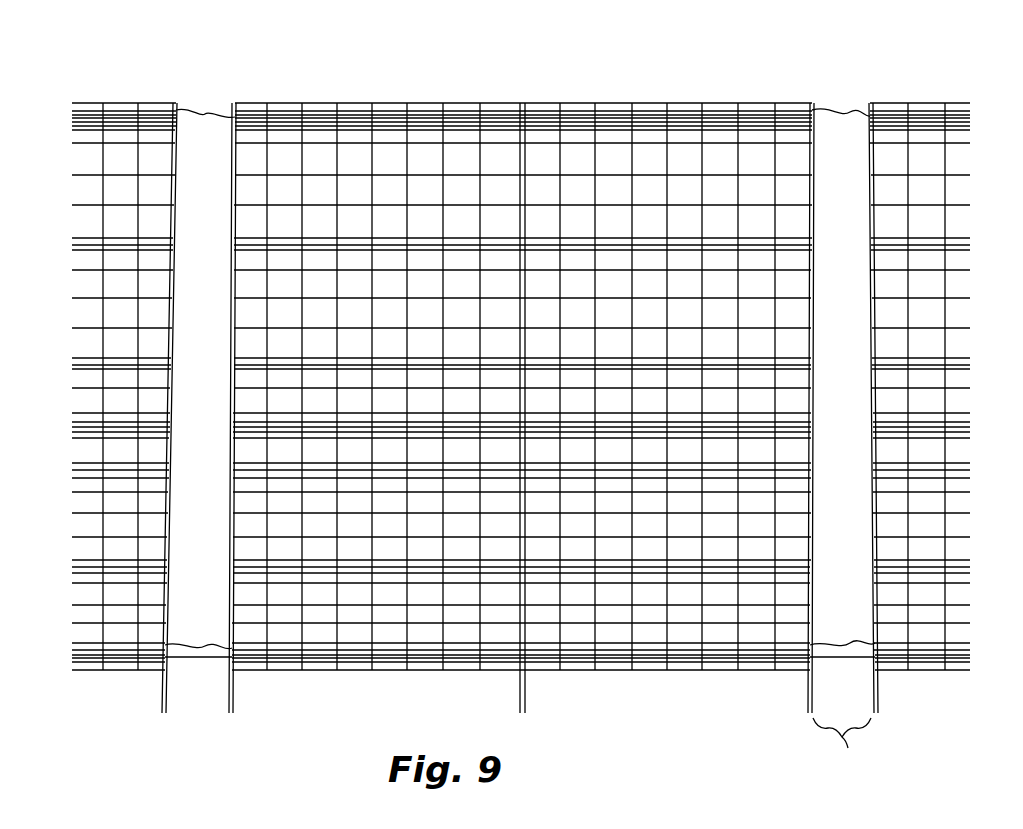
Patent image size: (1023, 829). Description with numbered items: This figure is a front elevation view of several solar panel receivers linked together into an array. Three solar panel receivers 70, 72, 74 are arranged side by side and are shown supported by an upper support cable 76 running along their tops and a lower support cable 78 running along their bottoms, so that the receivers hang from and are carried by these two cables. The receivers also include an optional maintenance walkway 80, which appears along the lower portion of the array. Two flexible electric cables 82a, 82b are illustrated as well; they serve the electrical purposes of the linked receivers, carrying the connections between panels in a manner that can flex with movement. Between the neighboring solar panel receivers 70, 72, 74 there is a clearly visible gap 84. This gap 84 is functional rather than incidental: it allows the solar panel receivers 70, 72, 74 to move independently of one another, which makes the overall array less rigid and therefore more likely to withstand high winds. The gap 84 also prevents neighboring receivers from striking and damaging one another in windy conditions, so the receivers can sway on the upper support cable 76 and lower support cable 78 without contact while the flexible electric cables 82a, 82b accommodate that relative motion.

The solar panel receiver 70 is at (118, 102).
The solar panel receiver 72 is at (637, 130).
The solar panel receiver 74 is at (913, 102).
The upper support cable 76 is at (205, 110).
The lower support cable 78 is at (195, 660).
The maintenance walkway 80 is at (632, 673).
The flexible electric cable 82a is at (887, 642).
The flexible electric cable 82b is at (832, 108).
The gap 84 is at (842, 745).